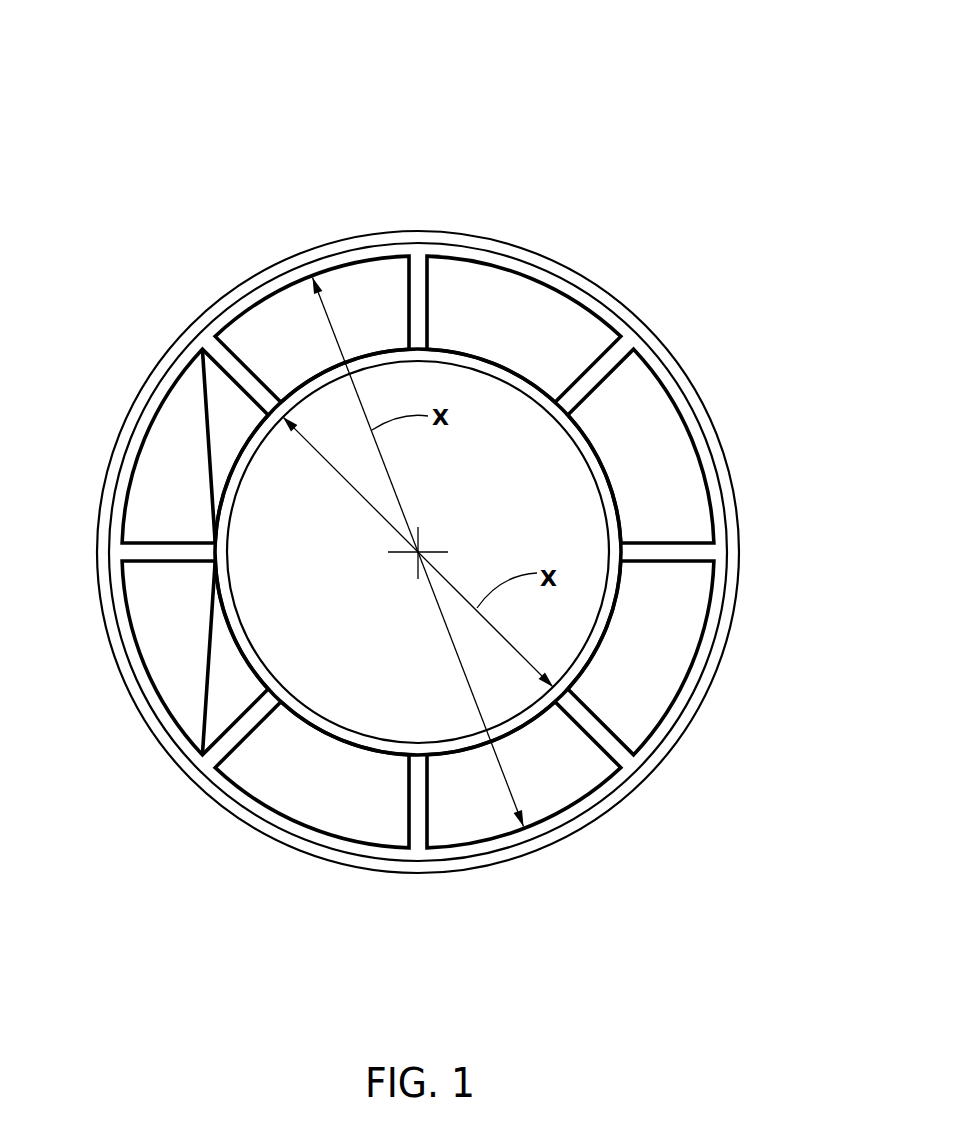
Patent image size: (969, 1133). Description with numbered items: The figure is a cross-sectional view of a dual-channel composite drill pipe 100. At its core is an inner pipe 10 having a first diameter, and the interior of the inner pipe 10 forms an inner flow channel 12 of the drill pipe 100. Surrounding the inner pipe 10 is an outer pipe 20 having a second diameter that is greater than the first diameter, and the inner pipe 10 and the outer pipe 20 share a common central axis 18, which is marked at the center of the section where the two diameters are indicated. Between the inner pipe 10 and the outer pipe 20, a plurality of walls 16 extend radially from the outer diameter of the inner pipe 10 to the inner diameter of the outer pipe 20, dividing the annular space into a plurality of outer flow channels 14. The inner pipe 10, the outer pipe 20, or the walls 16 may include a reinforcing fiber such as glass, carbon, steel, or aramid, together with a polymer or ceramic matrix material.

The dual-channel composite drill pipe 100 is at (612, 77).
The inner pipe 10 is at (490, 355).
The inner flow channel 12 is at (530, 470).
The outer flow channels 14 is at (573, 778).
The walls 16 is at (230, 382).
The central axis 18 is at (418, 552).
The outer pipe 20 is at (684, 370).